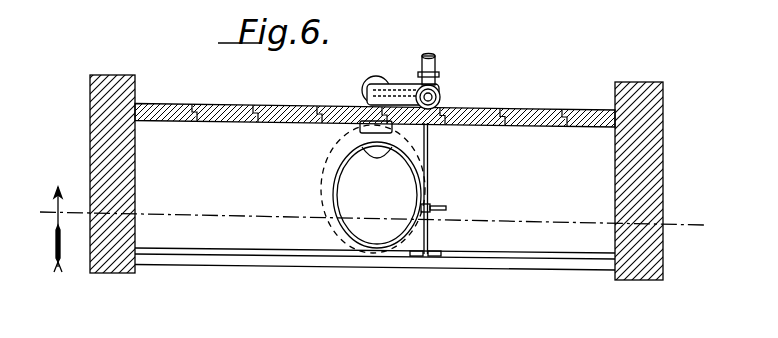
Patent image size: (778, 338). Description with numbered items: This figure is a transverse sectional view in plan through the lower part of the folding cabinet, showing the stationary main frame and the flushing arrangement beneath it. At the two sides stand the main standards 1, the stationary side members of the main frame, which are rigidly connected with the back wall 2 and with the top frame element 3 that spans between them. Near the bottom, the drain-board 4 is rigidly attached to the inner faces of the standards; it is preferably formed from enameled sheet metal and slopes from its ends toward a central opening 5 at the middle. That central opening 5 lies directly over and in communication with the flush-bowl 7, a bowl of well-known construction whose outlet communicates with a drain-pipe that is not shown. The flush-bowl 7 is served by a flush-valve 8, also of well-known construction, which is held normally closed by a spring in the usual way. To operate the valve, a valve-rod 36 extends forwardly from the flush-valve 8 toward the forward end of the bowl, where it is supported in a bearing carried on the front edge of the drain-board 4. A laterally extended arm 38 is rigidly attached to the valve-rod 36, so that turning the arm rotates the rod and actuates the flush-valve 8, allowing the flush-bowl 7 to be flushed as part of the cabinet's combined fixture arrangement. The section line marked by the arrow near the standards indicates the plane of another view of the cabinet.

The main standards 1 is at (90, 145).
The back wall 2 is at (512, 105).
The top frame element 3 is at (364, 229).
The drain-board 4 is at (375, 220).
The central opening 5 is at (342, 233).
The flush-bowl 7 is at (377, 184).
The flush-valve 8 is at (446, 84).
The valve-rod 36 is at (430, 155).
The laterally extended arm 38 is at (447, 207).